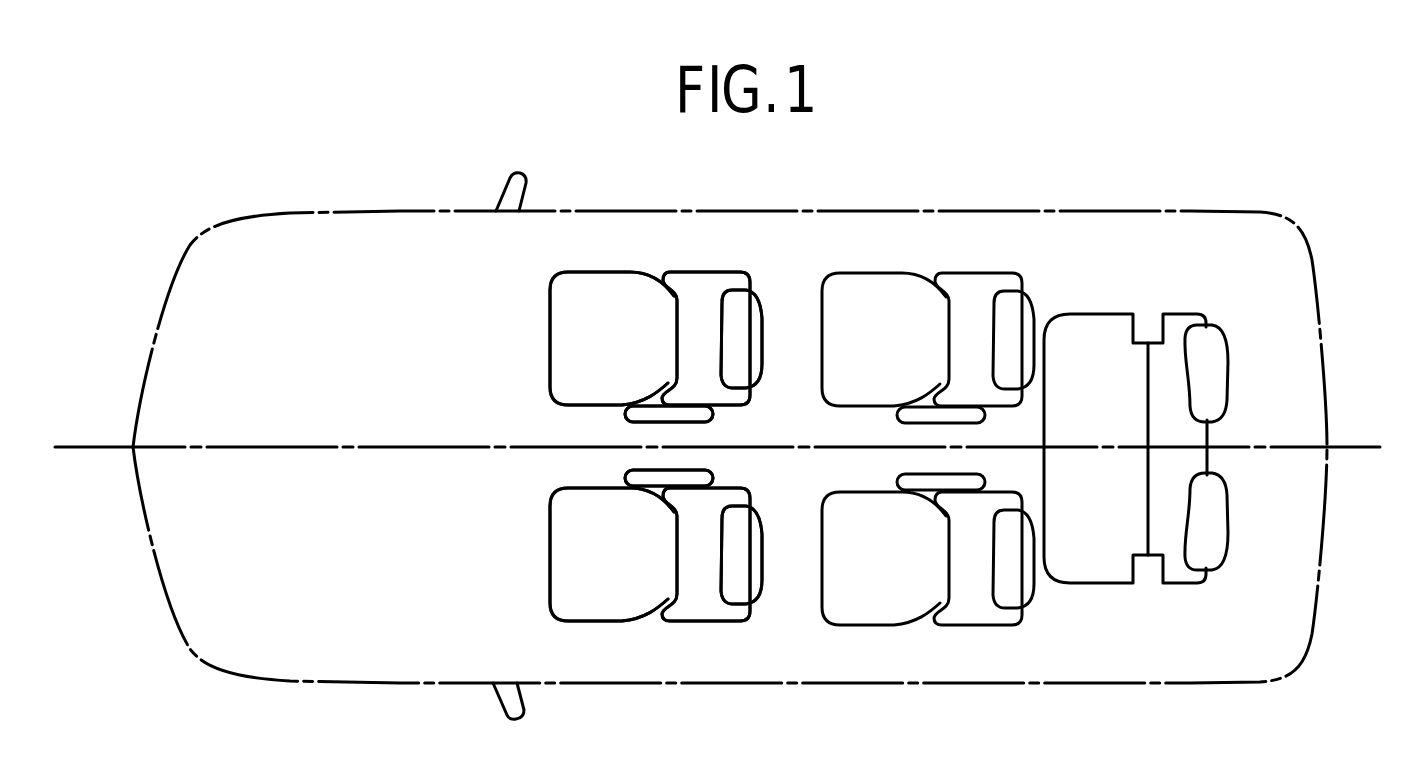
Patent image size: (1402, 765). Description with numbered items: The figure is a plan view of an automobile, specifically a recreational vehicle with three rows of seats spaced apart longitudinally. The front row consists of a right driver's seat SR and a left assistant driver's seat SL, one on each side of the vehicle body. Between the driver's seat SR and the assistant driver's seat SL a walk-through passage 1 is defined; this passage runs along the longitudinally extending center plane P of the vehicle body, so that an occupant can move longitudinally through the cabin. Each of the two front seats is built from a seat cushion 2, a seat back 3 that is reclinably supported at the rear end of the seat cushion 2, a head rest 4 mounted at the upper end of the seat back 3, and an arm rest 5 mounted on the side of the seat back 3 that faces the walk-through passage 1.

The walk-through passage 1 is at (786, 472).
The seat cushion 2 is at (573, 328).
The seat back 3 is at (703, 296).
The head rest 4 is at (745, 323).
The arm rest 5 is at (698, 412).
The center plane P is at (290, 447).
The driver's seat SR is at (612, 266).
The assistant driver's seat SL is at (598, 632).